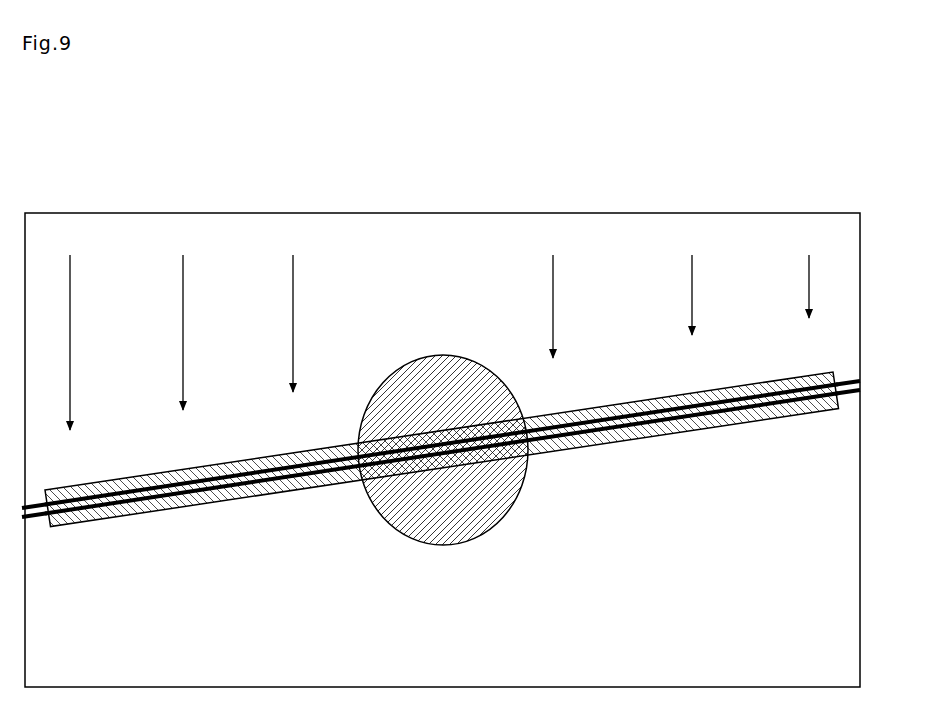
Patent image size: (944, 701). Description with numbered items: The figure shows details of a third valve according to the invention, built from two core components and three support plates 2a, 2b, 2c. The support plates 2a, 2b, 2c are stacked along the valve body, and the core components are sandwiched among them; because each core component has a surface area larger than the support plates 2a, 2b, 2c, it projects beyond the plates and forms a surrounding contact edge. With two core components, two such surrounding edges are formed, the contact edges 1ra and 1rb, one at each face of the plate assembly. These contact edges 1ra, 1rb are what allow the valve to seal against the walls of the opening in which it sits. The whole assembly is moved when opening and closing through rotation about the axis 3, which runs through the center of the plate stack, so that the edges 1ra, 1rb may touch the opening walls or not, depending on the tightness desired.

The contact edge 1ra is at (850, 379).
The contact edge 1rb is at (33, 521).
The support plate 2a is at (626, 420).
The support plate 2b is at (714, 423).
The support plate 2c is at (779, 423).
The axis 3 is at (456, 530).